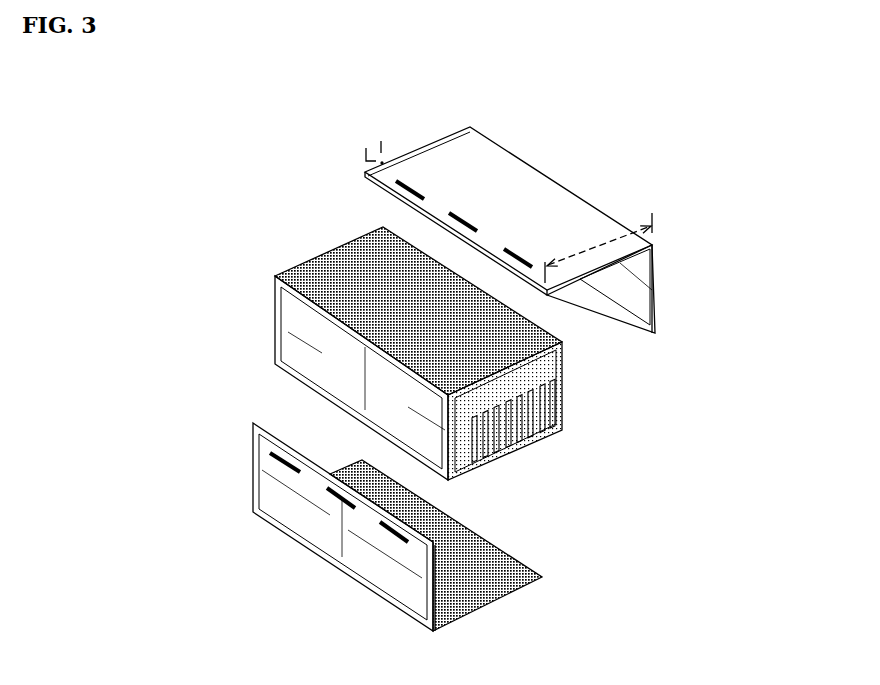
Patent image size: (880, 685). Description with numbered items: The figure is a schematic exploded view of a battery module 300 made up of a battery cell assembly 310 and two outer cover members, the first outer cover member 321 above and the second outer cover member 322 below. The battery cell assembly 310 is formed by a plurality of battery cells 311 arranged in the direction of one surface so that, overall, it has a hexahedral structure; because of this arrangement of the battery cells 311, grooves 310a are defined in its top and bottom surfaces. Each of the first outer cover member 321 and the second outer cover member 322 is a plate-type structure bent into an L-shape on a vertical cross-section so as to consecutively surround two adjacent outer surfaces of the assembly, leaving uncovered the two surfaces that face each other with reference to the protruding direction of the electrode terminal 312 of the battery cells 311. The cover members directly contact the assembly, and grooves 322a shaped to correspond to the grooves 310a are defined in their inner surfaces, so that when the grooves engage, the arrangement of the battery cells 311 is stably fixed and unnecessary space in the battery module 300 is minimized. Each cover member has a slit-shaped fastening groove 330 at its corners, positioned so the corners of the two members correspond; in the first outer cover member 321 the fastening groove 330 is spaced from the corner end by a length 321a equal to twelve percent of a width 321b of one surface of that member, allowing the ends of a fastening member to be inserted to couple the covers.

The battery module 300 is at (203, 163).
The battery cell assembly 310 is at (247, 287).
The grooves 310a is at (334, 262).
The battery cells 311 is at (323, 373).
The electrode terminal 312 is at (557, 402).
The first outer cover member 321 is at (675, 270).
The length 321a is at (374, 150).
The width 321b is at (608, 243).
The fastening groove 330 is at (406, 189).
The second outer cover member 322 is at (225, 462).
The grooves 322a is at (485, 565).